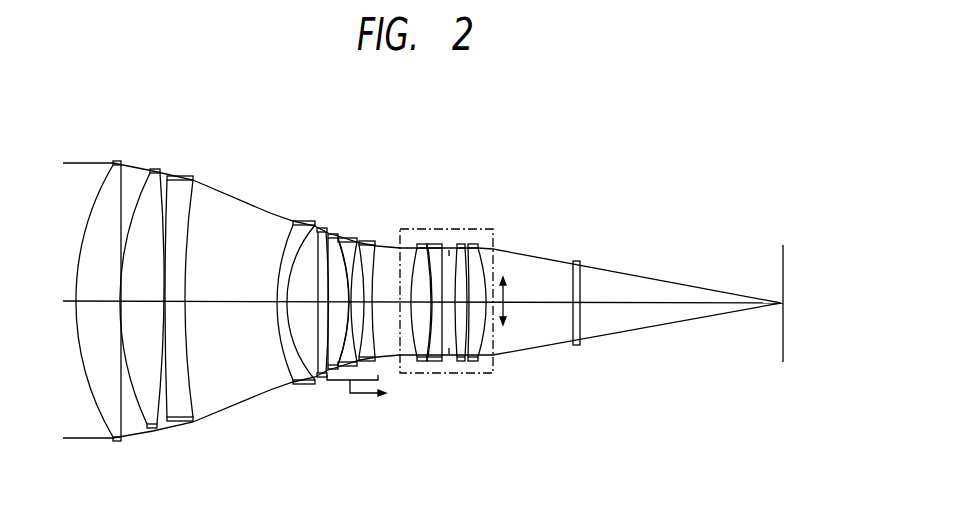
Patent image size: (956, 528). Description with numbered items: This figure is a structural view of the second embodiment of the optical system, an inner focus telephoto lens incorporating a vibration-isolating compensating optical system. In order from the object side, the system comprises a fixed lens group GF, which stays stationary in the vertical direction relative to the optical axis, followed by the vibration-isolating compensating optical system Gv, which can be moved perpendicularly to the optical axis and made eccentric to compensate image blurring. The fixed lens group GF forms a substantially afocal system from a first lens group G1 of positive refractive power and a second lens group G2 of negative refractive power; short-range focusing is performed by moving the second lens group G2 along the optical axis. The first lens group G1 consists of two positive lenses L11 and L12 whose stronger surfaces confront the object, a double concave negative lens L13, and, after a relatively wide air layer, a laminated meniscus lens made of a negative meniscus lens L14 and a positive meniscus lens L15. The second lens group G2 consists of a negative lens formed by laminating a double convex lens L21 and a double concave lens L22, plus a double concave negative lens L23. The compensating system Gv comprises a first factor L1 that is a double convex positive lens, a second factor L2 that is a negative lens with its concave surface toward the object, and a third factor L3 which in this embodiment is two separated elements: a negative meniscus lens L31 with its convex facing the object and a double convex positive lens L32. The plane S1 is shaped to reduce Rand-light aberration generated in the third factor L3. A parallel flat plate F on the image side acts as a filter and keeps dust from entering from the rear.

The fixed lens group GF is at (377, 111).
The first lens group G1 is at (90, 151).
The second lens group G2 is at (377, 151).
The vibration-isolating compensating optical system Gv is at (503, 151).
The positive lens L11 is at (108, 430).
The positive lens L12 is at (145, 429).
The double concave negative lens L13 is at (182, 423).
The negative meniscus lens L14 is at (288, 386).
The positive meniscus lens L15 is at (308, 384).
The double convex lens L21 is at (332, 232).
The double concave lens L22 is at (345, 237).
The double concave negative lens L23 is at (368, 241).
The first factor L1 is at (417, 244).
The second factor L2 is at (432, 244).
The third factor L3 is at (520, 194).
The negative meniscus lens L31 is at (460, 244).
The double convex positive lens L32 is at (485, 244).
The plane S1 is at (458, 361).
The parallel flat plate F is at (575, 260).